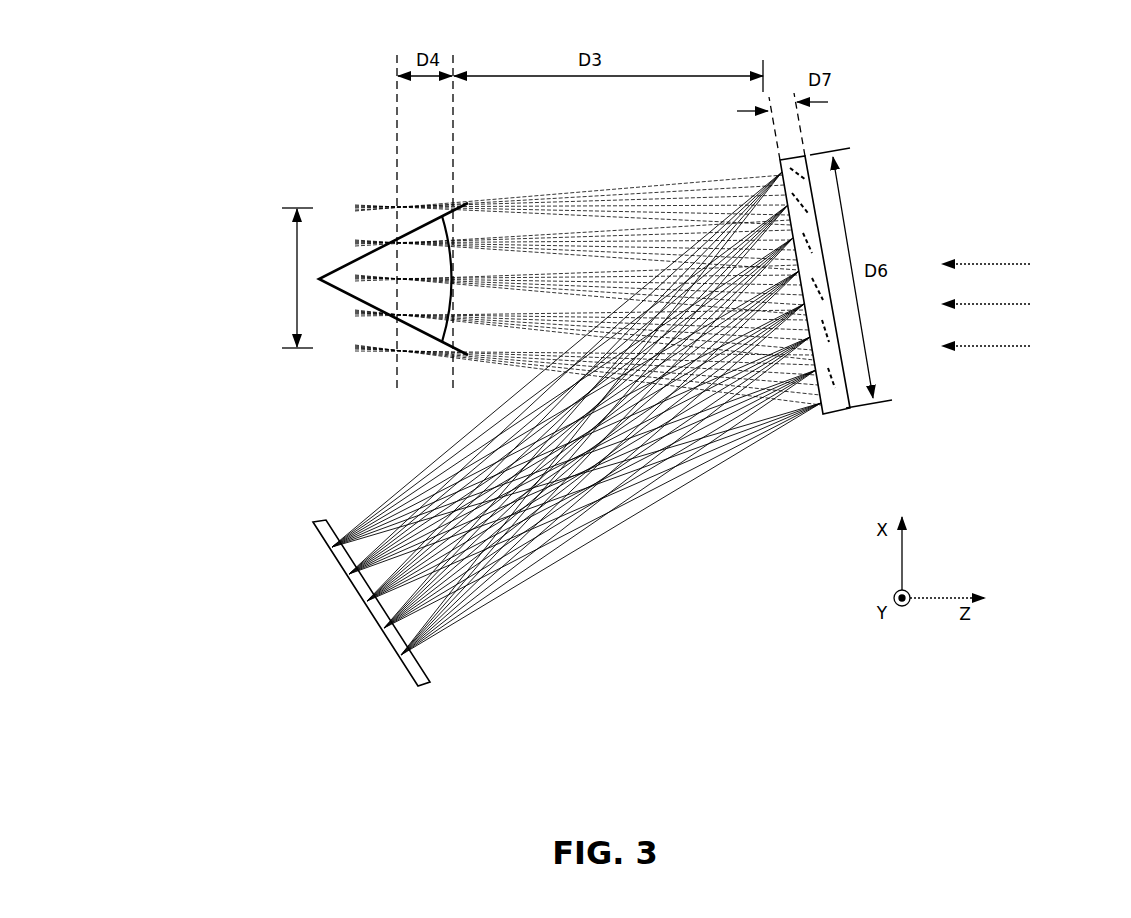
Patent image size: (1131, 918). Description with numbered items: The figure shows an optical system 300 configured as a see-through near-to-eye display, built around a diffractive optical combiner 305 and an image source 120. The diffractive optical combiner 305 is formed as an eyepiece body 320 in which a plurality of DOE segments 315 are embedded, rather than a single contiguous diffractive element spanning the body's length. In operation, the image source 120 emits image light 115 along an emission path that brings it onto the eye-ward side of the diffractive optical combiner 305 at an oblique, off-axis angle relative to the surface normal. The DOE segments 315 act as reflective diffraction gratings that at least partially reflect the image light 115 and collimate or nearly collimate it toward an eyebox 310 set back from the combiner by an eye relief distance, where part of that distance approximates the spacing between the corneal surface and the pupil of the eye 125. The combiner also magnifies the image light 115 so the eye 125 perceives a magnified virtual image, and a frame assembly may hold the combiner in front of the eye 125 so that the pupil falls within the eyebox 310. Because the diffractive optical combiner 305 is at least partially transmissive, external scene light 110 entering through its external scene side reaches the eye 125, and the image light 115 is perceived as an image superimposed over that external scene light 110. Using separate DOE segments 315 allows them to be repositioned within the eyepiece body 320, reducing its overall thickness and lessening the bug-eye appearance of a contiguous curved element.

The optical system 300 is at (122, 93).
The image light 115 is at (660, 180).
The diffractive optical combiner 305 is at (899, 241).
The eyebox 310 is at (297, 320).
The external scene light 110 is at (985, 264).
The eye 125 is at (393, 279).
The DOE segments 315 is at (812, 243).
The eyepiece body 320 is at (846, 410).
The image source 120 is at (393, 647).